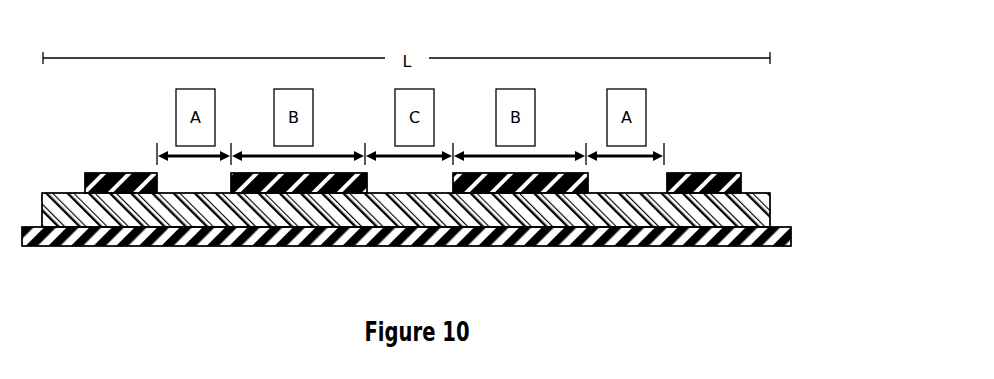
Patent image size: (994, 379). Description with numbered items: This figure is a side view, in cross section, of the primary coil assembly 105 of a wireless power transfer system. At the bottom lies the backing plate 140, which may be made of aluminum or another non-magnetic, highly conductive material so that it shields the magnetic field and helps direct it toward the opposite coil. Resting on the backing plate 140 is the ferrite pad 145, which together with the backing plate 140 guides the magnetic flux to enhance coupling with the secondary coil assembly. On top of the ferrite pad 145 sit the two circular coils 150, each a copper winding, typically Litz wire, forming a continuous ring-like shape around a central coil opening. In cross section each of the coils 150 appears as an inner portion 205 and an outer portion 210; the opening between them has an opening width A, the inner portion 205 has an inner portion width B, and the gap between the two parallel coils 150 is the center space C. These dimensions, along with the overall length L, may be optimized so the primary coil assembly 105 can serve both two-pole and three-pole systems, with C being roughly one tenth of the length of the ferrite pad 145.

The primary coil assembly 105 is at (437, 213).
The backing plate 140 is at (748, 238).
The ferrite pad 145 is at (237, 200).
The spiral windings 150 is at (402, 213).
The inner portion 205 is at (319, 191).
The outer portion 210 is at (138, 191).